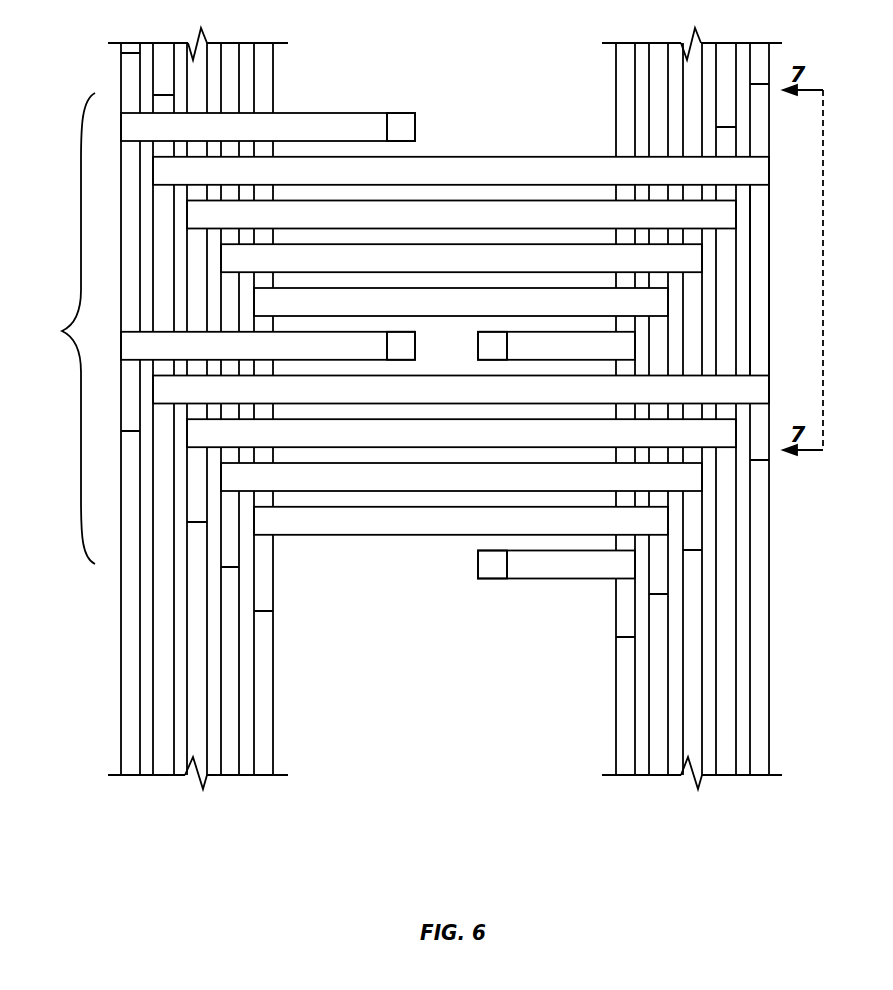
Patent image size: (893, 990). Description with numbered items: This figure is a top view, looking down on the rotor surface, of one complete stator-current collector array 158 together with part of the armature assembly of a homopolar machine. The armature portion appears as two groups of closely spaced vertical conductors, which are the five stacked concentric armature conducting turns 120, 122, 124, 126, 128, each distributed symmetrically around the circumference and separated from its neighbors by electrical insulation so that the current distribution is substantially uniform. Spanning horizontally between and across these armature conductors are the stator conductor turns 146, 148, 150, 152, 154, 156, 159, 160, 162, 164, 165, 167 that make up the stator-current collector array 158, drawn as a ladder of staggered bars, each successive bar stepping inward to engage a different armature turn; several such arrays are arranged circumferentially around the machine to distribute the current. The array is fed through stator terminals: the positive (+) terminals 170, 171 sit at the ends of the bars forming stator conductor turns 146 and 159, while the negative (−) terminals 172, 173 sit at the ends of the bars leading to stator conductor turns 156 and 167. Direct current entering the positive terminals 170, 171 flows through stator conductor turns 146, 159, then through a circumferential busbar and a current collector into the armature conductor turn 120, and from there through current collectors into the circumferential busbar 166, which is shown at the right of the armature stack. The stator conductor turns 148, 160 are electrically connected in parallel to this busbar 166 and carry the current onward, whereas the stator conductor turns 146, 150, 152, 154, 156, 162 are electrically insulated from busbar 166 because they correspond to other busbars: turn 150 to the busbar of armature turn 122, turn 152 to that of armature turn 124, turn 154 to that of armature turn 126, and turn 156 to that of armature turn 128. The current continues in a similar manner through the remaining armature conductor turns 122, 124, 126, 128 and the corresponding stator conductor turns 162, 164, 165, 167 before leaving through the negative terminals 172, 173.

The armature conducting turn 120 is at (132, 740).
The armature conducting turn 122 is at (163, 765).
The armature conducting turn 124 is at (202, 784).
The armature conducting turn 126 is at (230, 763).
The armature conducting turn 128 is at (265, 740).
The stator conductor turn 146 is at (315, 117).
The stator conductor turn 148 is at (423, 163).
The stator conductor turn 150 is at (453, 207).
The stator conductor turn 152 is at (473, 253).
The stator conductor turn 154 is at (513, 300).
The stator conductor turn 156 is at (557, 345).
The stator-current collector array 158 is at (62, 331).
The stator conductor turn 159 is at (134, 345).
The stator conductor turn 160 is at (358, 393).
The stator conductor turn 162 is at (380, 440).
The stator conductor turn 164 is at (418, 487).
The stator conductor turn 165 is at (443, 525).
The circumferential busbar 166 is at (758, 353).
The stator conductor turn 167 is at (548, 570).
The positive stator terminal 170 is at (392, 117).
The positive stator terminal 171 is at (400, 352).
The negative stator terminal 172 is at (498, 345).
The negative stator terminal 173 is at (493, 576).